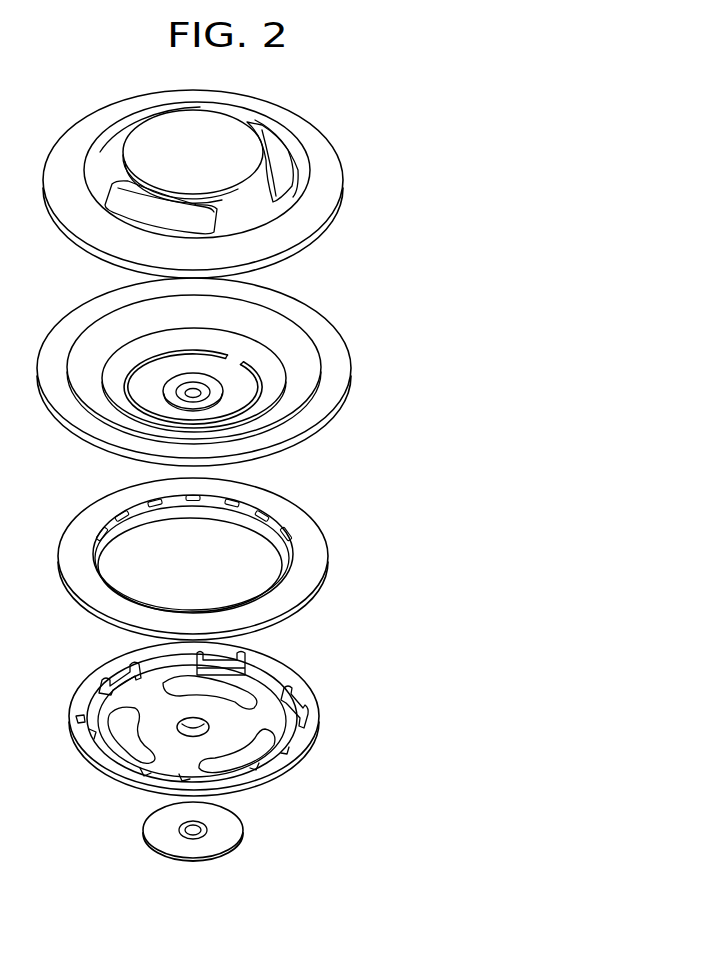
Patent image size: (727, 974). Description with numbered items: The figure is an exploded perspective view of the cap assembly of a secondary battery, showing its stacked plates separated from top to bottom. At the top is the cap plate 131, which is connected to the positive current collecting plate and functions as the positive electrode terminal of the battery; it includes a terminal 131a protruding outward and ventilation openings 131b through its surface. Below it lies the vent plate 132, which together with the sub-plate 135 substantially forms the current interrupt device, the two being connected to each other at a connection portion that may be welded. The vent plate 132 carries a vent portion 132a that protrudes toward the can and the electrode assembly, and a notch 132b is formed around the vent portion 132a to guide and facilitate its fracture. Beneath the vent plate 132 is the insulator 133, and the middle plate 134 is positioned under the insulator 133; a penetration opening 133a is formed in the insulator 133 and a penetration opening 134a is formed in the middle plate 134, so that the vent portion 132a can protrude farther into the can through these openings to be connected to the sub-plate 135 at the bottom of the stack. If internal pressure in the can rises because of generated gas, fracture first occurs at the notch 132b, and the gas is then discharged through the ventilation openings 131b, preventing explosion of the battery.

The cap plate 131 is at (327, 207).
The terminal 131a is at (237, 148).
The ventilation openings 131b is at (278, 182).
The vent plate 132 is at (323, 405).
The vent portion 132a is at (197, 390).
The notch 132b is at (224, 355).
The insulator 133 is at (315, 545).
The penetration opening 133a is at (227, 566).
The middle plate 134 is at (310, 707).
The penetration opening 134a is at (200, 730).
The sub-plate 135 is at (238, 828).